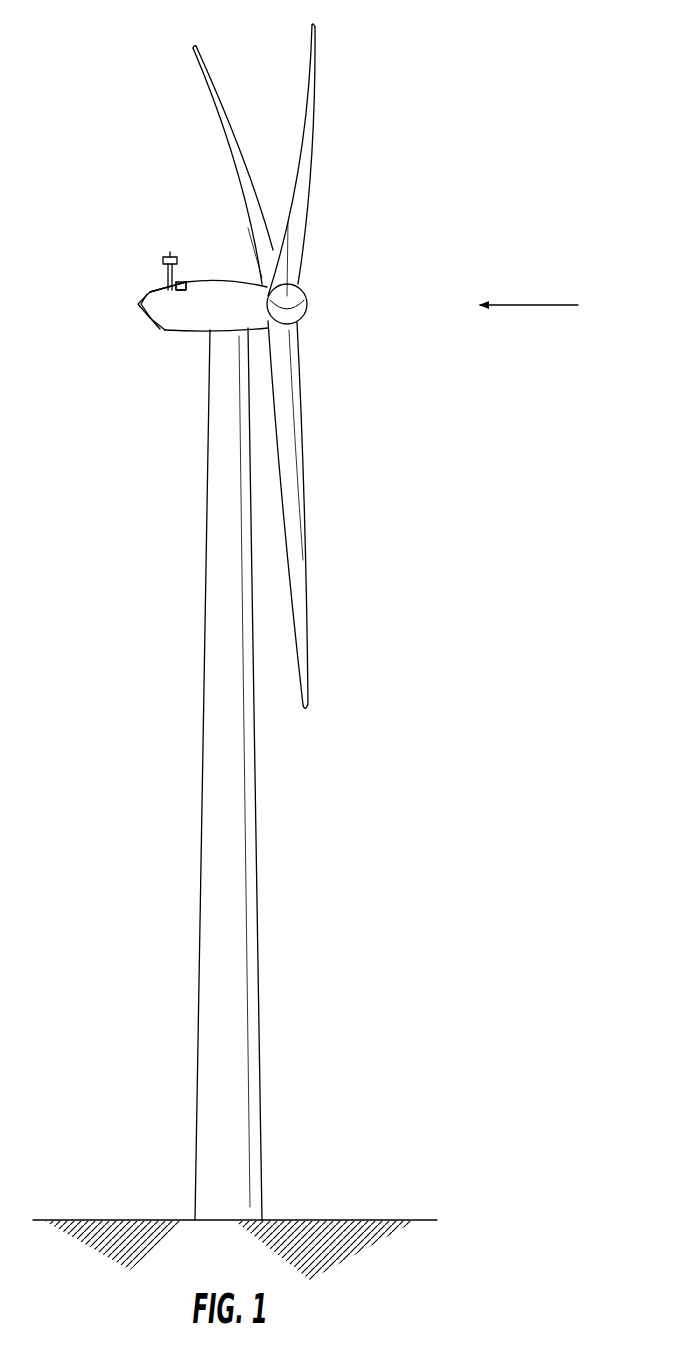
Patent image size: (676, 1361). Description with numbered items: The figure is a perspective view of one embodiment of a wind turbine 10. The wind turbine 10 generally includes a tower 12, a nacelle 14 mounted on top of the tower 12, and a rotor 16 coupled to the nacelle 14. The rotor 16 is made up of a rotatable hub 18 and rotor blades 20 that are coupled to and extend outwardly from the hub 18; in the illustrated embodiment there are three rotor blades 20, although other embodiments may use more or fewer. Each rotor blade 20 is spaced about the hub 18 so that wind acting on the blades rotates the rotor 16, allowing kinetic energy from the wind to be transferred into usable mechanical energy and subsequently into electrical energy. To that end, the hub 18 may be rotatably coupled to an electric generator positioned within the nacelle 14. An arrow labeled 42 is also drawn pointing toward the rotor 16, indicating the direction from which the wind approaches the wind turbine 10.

The wind turbine 10 is at (414, 108).
The tower 12 is at (213, 895).
The nacelle 14 is at (185, 332).
The rotor 16 is at (317, 274).
The rotatable hub 18 is at (309, 312).
The rotor blade 20 is at (305, 77).
The wind direction 42 is at (520, 305).